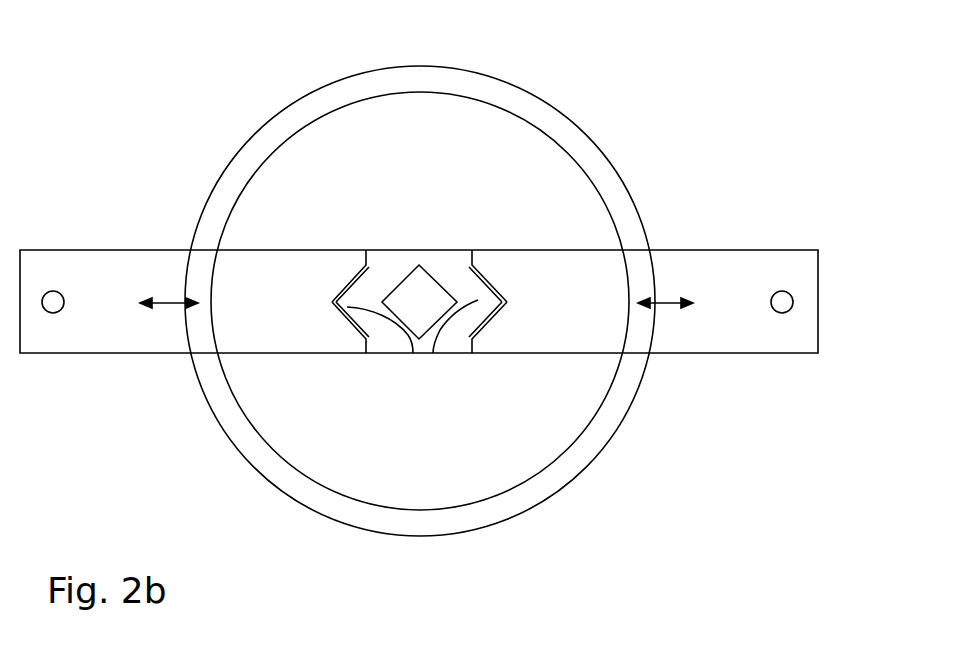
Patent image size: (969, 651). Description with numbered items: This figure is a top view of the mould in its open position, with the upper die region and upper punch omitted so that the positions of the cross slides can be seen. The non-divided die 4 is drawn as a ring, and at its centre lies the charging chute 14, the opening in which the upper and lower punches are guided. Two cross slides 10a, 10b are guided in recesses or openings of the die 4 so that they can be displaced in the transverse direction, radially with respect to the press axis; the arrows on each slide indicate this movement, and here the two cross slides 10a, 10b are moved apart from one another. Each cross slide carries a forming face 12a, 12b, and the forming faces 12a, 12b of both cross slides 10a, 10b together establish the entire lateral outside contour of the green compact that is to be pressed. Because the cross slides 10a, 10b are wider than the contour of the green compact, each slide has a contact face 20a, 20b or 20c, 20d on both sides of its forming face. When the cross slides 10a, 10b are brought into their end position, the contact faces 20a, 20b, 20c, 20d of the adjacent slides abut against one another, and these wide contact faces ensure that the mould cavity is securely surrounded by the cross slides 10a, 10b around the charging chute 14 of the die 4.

The die 4 is at (460, 118).
The cross slide 10a is at (100, 277).
The cross slide 10b is at (720, 265).
The forming face 12a is at (413, 353).
The forming face 12b is at (433, 353).
The charging chute 14 is at (424, 277).
The contact face 20a is at (366, 345).
The contact face 20b is at (366, 264).
The contact face 20c is at (470, 338).
The contact face 20d is at (469, 264).